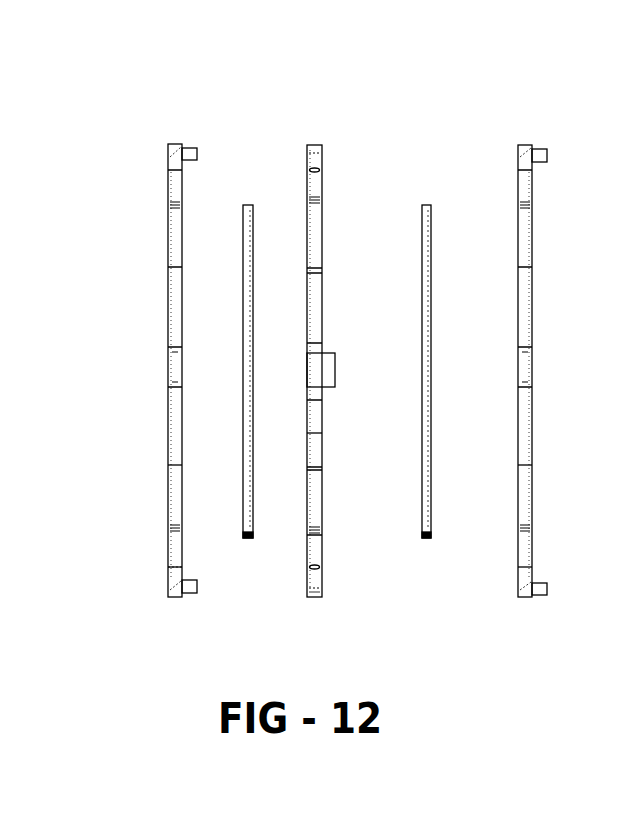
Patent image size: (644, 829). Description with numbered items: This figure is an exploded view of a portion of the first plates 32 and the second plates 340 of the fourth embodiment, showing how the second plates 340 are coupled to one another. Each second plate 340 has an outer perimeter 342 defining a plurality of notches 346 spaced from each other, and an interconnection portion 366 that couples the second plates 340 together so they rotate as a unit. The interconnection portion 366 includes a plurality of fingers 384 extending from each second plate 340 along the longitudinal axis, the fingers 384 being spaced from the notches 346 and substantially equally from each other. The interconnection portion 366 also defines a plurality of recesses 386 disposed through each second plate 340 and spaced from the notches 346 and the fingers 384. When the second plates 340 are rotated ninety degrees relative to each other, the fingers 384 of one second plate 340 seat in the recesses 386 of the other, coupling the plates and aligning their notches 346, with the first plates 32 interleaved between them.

The first plate 32 is at (243, 509).
The second plate 340 is at (175, 458).
The outer perimeter 342 is at (177, 598).
The notch 346 is at (168, 211).
The interconnection portion 366 is at (141, 166).
The finger 384 is at (190, 148).
The recess 386 is at (173, 367).